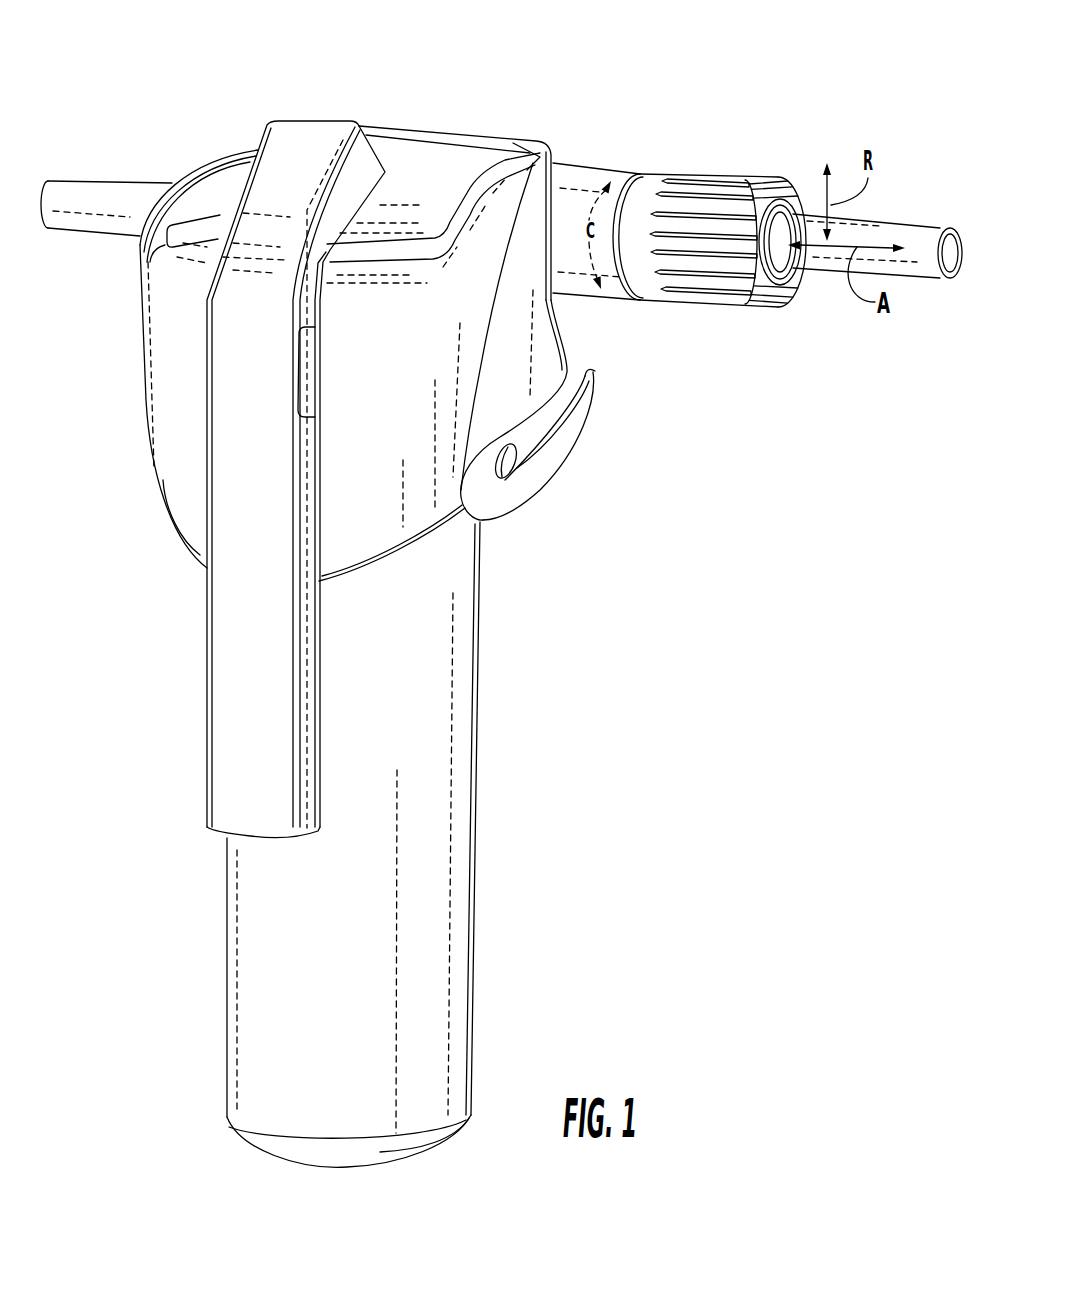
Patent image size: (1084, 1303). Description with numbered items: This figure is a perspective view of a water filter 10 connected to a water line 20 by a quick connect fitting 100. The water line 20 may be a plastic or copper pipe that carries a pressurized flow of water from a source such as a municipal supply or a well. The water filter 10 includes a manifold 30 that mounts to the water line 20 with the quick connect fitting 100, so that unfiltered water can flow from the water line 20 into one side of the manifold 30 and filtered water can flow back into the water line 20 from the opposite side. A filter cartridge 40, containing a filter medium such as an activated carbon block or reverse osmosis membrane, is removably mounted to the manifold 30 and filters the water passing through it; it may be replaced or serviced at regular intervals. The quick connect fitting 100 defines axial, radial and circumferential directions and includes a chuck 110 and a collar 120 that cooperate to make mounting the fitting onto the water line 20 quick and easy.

The water filter 10 is at (131, 572).
The water line 20 is at (103, 200).
The manifold 30 is at (163, 363).
The filter cartridge 40 is at (430, 767).
The quick connect fitting 100 is at (679, 194).
The chuck 110 is at (578, 288).
The collar 120 is at (707, 185).